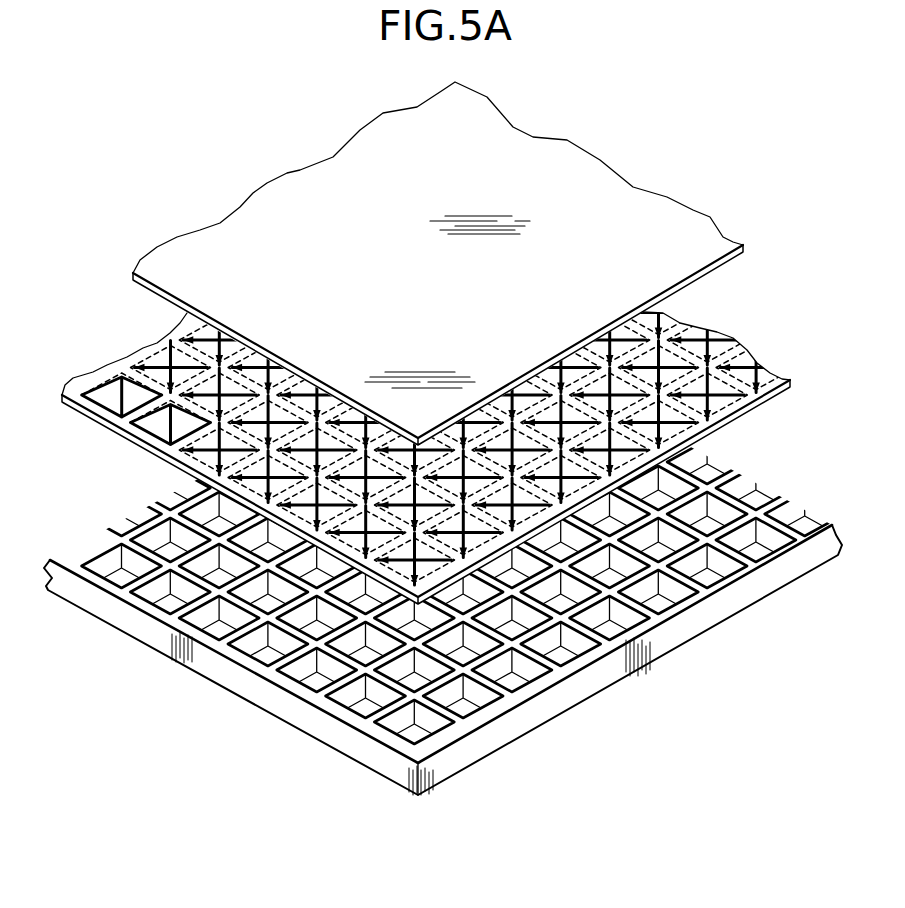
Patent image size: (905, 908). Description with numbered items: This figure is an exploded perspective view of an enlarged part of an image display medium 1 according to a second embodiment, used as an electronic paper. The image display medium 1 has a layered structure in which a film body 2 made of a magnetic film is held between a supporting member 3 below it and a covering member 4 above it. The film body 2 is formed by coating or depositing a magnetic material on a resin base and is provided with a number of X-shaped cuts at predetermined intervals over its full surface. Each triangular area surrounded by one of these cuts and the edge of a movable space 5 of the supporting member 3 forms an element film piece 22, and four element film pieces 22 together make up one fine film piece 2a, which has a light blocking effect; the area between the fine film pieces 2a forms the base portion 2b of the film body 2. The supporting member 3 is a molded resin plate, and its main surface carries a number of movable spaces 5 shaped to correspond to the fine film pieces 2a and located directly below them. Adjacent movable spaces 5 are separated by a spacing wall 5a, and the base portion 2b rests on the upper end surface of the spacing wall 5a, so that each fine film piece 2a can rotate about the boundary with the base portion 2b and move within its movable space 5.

The image display medium 1 is at (684, 162).
The film body 2 is at (748, 402).
The fine film piece 2a is at (140, 293).
The base portion 2b is at (186, 303).
The element film piece 22 is at (88, 393).
The supporting member 3 is at (700, 622).
The covering member 4 is at (677, 222).
The movable space 5 is at (417, 689).
The spacing wall 5a is at (297, 638).